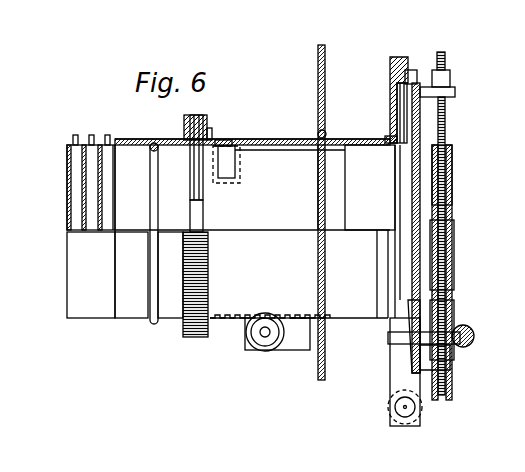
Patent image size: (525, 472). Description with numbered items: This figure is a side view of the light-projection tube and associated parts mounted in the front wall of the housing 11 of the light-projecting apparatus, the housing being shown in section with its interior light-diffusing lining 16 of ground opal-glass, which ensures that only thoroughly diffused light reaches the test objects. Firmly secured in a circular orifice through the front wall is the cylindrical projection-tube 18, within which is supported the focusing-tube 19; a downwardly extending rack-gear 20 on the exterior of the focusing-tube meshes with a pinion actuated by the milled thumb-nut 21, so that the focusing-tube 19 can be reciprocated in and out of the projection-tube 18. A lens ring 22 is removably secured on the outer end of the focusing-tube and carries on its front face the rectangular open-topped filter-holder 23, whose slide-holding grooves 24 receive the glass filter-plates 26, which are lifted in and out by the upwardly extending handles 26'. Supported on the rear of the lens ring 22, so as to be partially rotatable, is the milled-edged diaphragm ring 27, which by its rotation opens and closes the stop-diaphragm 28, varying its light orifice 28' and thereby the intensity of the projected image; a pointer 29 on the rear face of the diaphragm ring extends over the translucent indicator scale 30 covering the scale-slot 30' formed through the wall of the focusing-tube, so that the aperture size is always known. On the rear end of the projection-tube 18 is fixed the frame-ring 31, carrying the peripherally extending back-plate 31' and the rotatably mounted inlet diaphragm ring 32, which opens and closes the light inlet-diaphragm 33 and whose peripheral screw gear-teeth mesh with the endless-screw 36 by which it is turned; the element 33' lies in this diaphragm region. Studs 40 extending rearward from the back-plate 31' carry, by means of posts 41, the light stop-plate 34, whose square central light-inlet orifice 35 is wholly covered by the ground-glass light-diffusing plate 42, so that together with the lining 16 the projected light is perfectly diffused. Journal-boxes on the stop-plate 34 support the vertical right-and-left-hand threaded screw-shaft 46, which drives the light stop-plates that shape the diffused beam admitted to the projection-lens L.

The housing 11 is at (317, 65).
The light-diffusing lining 16 is at (326, 82).
The projection-tube 18 is at (270, 140).
The focusing-tube 19 is at (335, 149).
The rack-gear 20 is at (238, 315).
The milled thumb-nut 21 is at (265, 340).
The lens ring 22 is at (152, 142).
The filter-holder 23 is at (91, 231).
The slide-holding grooves 24 is at (80, 145).
The filter-plates 26 is at (76, 187).
The handles 26' is at (66, 168).
The diaphragm ring 27 is at (205, 128).
The stop-diaphragm 28 is at (185, 157).
The light orifice 28' is at (223, 215).
The pointer 29 is at (213, 138).
The indicator scale 30 is at (244, 132).
The scale-slot 30' is at (242, 164).
The frame-ring 31 is at (381, 255).
The back-plate 31' is at (372, 113).
The inlet diaphragm ring 32 is at (390, 78).
The light inlet-diaphragm 33 is at (373, 161).
The plate 33' is at (378, 222).
The light stop-plate 34 is at (422, 120).
The light-inlet orifice 35 is at (395, 183).
The endless-screw 36 is at (422, 412).
The studs 40 is at (399, 57).
The posts 41 is at (416, 72).
The ground-glass light-diffusing plate 42 is at (440, 228).
The vertical double-screw shaft 46 is at (448, 148).
The projection-lens L is at (150, 185).